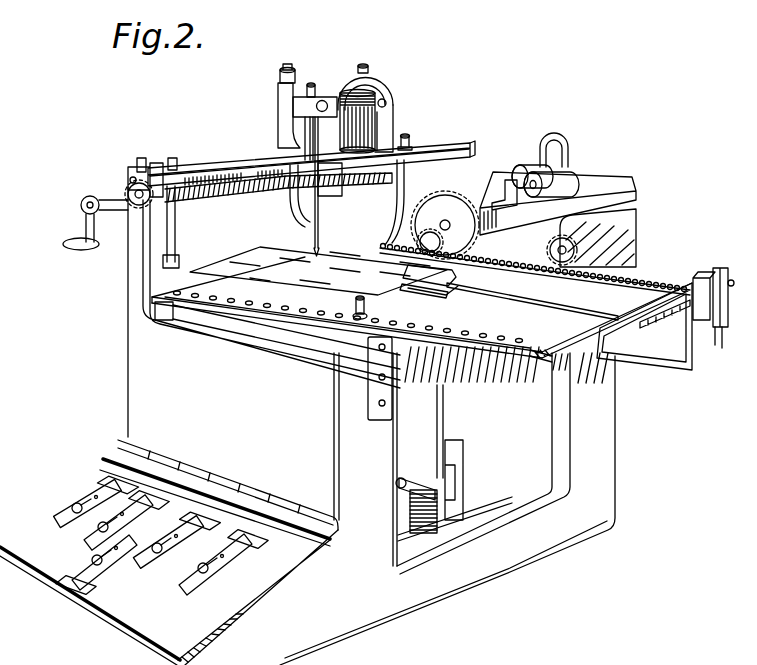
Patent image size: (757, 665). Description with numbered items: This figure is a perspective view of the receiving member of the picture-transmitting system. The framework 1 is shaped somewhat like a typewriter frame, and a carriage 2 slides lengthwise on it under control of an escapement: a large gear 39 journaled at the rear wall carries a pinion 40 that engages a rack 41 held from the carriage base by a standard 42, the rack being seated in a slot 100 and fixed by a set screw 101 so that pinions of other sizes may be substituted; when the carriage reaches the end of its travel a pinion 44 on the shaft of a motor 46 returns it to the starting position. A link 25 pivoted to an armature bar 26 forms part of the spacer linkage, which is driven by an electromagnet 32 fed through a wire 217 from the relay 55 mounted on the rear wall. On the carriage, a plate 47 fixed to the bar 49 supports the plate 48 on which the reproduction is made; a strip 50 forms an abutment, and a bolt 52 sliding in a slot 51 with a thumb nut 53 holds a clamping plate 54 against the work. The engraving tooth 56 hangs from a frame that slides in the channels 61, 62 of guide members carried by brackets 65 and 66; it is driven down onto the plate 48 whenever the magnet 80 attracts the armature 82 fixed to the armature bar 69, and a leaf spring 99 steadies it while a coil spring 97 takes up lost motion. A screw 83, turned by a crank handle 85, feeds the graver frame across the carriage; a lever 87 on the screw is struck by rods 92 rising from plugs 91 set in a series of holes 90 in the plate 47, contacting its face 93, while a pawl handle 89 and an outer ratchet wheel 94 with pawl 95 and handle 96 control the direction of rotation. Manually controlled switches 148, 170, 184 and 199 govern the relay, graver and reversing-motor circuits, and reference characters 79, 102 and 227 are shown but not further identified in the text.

The framework 1 is at (612, 483).
The carriage 2 is at (650, 378).
The link 25 is at (448, 404).
The armature bar 26 is at (418, 470).
The electromagnet 32 is at (433, 535).
The large gear 39 is at (434, 196).
The pinion 40 is at (420, 238).
The rack 41 is at (671, 276).
The standard 42 is at (696, 370).
The pinion 44 is at (548, 250).
The motor 46 is at (638, 245).
The plate 47 is at (536, 362).
The plate 48 is at (271, 266).
The bar 49 is at (668, 322).
The strip 50 is at (347, 297).
The slot 51 is at (520, 295).
The bolt 52 is at (450, 278).
The thumb nut 53 is at (455, 287).
The clamping plate 54 is at (428, 297).
The relay 55 is at (540, 160).
The engraving tooth 56 is at (321, 245).
The channel 61 is at (222, 163).
The channel 62 is at (266, 164).
The bracket 65 is at (402, 190).
The bracket 66 is at (128, 283).
The armature bar 69 is at (303, 58).
The block 79 is at (279, 109).
The magnet 80 is at (387, 108).
The armature 82 is at (350, 80).
The screw 83 is at (228, 204).
The handle 85 is at (66, 252).
The lever 87 is at (177, 230).
The handle 89 is at (174, 158).
The holes 90 is at (308, 316).
The plug 91 is at (356, 308).
The rod 92 is at (367, 308).
The face 93 is at (180, 257).
The ratchet wheel 94 is at (126, 192).
The pawl 95 is at (130, 178).
The handle 96 is at (152, 152).
The coil spring 97 is at (410, 133).
The leaf spring 99 is at (298, 211).
The slot 100 is at (710, 312).
The set screw 101 is at (738, 262).
The pin 102 is at (729, 336).
The switch 148 is at (102, 566).
The switch 170 is at (94, 530).
The switch 184 is at (73, 505).
The switch 199 is at (162, 552).
The wire 217 is at (570, 148).
The keyboard 227 is at (86, 470).